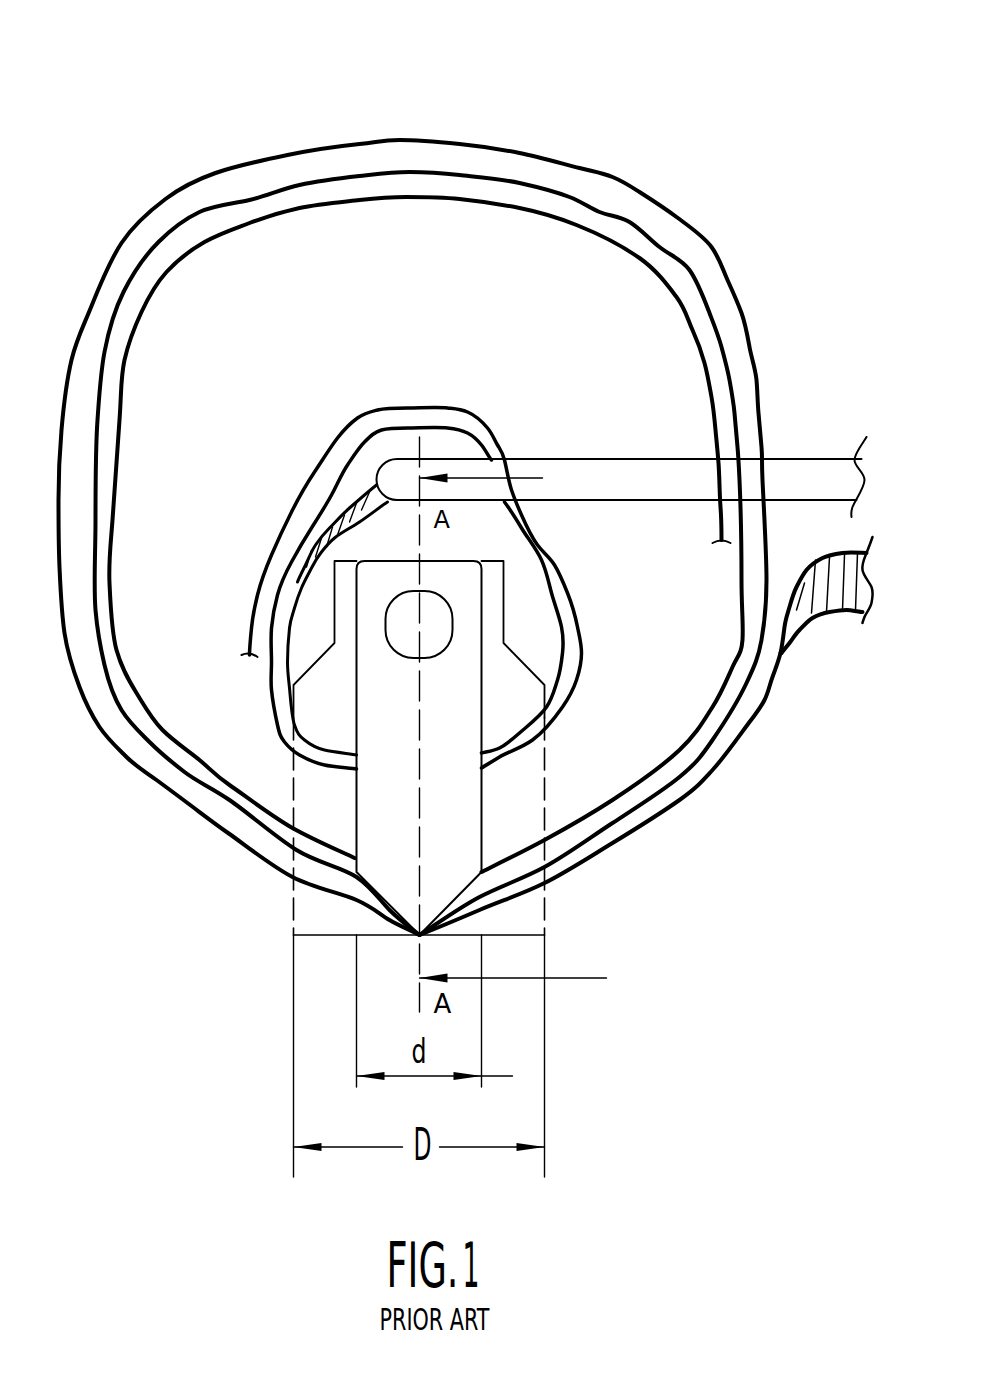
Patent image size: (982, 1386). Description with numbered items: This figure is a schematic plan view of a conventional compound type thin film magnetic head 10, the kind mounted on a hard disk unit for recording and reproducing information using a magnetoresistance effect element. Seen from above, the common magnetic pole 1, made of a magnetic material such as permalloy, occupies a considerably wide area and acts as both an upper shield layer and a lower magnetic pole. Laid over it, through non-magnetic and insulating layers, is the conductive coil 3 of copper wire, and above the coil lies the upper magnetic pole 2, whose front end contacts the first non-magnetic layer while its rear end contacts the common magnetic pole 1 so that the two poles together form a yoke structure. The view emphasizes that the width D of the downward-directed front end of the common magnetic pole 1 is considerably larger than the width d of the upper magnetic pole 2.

The conventional compound type thin film magnetic head 10 is at (228, 140).
The common magnetic pole 1 is at (294, 913).
The upper magnetic pole 2 is at (483, 798).
The conductive coil 3 is at (618, 180).